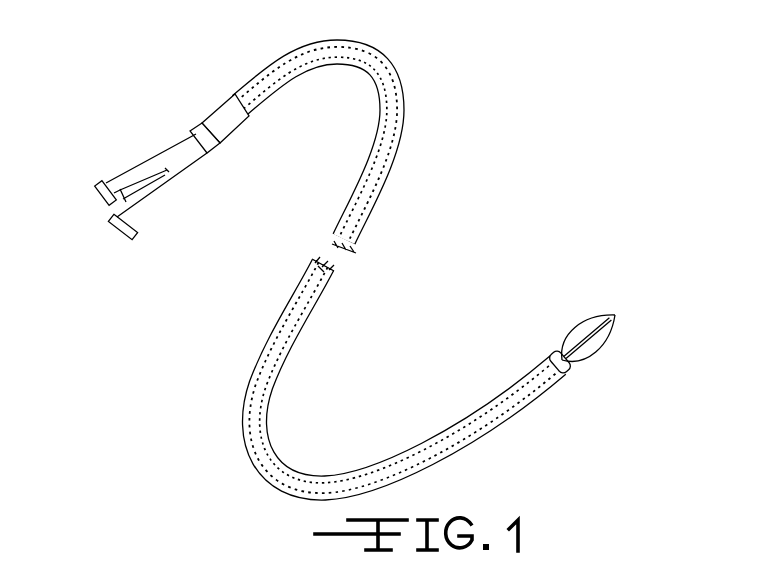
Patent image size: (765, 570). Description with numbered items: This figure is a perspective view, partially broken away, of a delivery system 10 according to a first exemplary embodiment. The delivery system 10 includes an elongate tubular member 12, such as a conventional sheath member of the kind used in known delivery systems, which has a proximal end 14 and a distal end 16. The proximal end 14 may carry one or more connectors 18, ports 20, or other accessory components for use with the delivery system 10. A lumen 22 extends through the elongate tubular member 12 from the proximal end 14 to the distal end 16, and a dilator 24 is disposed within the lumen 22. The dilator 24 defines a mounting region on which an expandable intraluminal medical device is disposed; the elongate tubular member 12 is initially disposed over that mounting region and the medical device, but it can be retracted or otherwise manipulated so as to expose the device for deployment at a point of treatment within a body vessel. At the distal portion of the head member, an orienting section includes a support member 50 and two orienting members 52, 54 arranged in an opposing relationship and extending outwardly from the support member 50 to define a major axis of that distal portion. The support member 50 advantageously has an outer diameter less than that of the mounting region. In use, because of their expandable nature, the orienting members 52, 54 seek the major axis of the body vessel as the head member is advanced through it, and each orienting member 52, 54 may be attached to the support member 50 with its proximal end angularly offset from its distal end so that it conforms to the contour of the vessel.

The delivery system 10 is at (195, 357).
The elongate tubular member 12 is at (398, 161).
The proximal end 14 is at (233, 97).
The distal end 16 is at (572, 378).
The connector 18 is at (191, 129).
The port 20 is at (100, 184).
The lumen 22 is at (319, 259).
The dilator 24 is at (284, 365).
The support member 50 is at (615, 316).
The orienting member 52 is at (588, 322).
The orienting member 54 is at (602, 352).